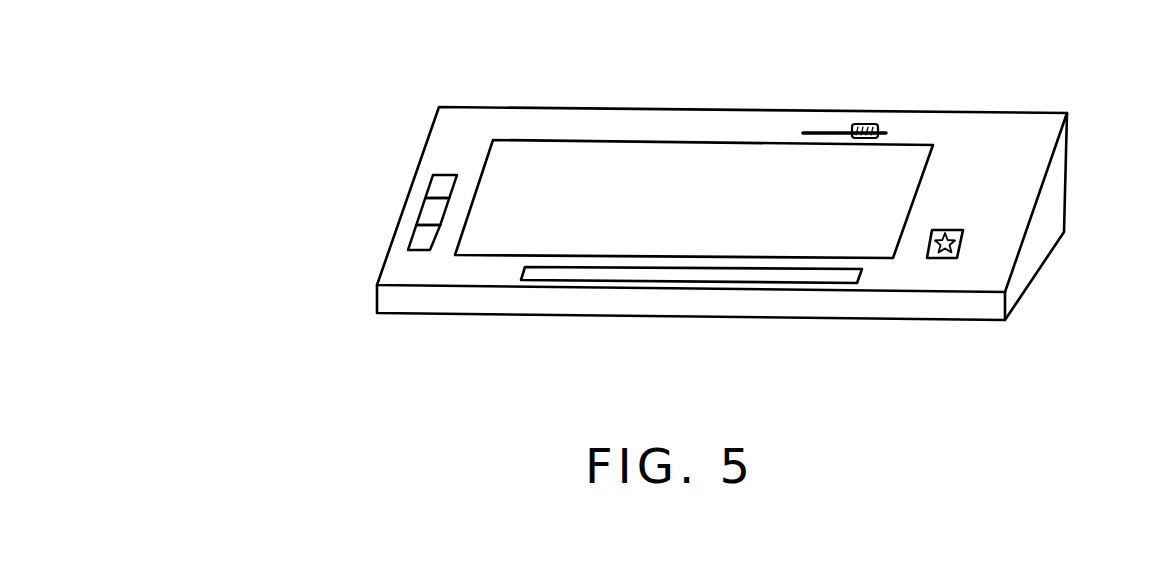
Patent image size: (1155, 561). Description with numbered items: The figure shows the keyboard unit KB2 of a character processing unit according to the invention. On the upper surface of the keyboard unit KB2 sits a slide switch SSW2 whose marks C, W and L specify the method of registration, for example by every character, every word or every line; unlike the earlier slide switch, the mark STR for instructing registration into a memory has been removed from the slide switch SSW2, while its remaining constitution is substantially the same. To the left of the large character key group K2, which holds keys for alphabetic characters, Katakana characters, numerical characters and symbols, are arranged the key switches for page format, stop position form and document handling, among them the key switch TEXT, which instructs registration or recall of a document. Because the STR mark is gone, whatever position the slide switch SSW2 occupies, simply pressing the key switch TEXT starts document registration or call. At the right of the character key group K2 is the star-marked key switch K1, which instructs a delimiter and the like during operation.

The keyboard unit KB2 is at (882, 305).
The character key group K2 is at (502, 243).
The key switch K1 is at (958, 244).
The slide switch SSW2 is at (860, 127).
The key switch TEXT is at (408, 238).